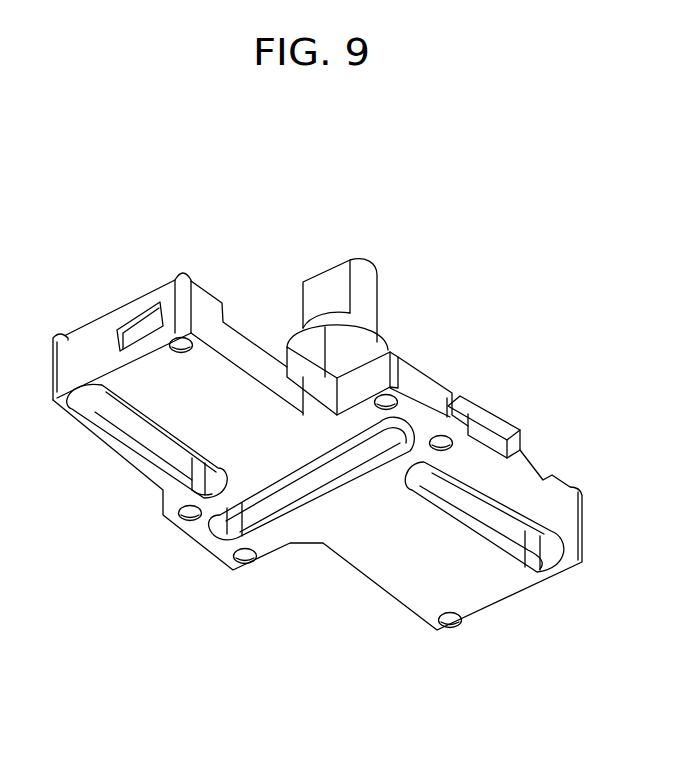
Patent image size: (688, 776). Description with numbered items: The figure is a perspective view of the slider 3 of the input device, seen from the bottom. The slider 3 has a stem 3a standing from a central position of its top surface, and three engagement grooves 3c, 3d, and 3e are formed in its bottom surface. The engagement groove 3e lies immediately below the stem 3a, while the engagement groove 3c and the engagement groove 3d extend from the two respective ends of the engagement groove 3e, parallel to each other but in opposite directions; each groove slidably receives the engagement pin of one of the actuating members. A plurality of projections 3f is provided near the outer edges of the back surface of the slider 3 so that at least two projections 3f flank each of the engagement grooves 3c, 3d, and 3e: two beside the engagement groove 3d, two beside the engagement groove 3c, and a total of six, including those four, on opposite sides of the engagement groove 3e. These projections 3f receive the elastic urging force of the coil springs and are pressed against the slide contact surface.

The slider 3 is at (531, 405).
The stem 3a is at (370, 262).
The engagement groove 3c is at (507, 533).
The engagement groove 3d is at (127, 423).
The engagement groove 3e is at (302, 480).
The projections 3f is at (185, 342).